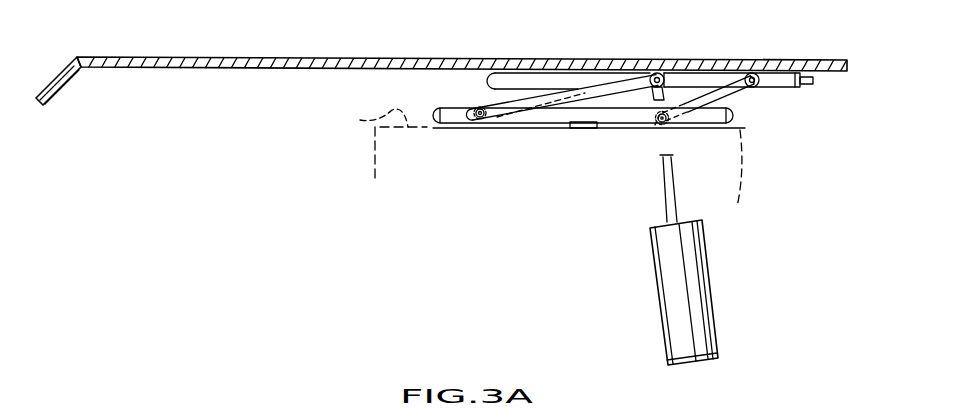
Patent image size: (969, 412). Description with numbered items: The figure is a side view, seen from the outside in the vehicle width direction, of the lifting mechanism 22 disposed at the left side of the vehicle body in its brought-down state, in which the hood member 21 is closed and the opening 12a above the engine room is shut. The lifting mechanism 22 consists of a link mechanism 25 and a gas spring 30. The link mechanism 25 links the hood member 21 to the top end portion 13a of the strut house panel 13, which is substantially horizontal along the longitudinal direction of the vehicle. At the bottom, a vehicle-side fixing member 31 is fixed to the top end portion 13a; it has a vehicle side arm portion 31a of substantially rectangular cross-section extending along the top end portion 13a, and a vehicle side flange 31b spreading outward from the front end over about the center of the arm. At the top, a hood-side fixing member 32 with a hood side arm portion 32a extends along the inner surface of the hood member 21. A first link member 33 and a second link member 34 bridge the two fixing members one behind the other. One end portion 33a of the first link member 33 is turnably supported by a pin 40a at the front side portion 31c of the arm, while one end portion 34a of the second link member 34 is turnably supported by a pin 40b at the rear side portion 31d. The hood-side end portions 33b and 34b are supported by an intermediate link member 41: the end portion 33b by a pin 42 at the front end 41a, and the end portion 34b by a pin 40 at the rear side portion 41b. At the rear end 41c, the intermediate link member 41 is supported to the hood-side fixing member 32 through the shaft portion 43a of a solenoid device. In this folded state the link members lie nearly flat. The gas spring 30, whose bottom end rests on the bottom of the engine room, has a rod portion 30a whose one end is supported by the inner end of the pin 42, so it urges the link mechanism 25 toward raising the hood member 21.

The hood member 21 is at (318, 57).
The opening 12a is at (242, 84).
The strut house panel 13 is at (391, 166).
The top end portion 13a is at (360, 119).
The link mechanism 25 is at (444, 92).
The hood-side fixing member 32 is at (568, 52).
The hood side arm portion 32a is at (503, 72).
The first link member 33 is at (586, 78).
The one end portion 33a is at (477, 120).
The one end portion 33b is at (645, 76).
The pin 42 is at (658, 74).
The vehicle-side fixing member 31 is at (573, 136).
The vehicle side arm portion 31a is at (735, 118).
The vehicle side flange 31b is at (470, 125).
The front side portion 31c is at (467, 121).
The rear side portion 31d is at (672, 123).
The pin 40a is at (493, 121).
The pin 40b is at (676, 126).
The intermediate link member 41 is at (720, 66).
The front end 41a is at (678, 76).
The rear side portion 41b is at (773, 76).
The rear end 41c is at (793, 75).
The pin 40 is at (752, 75).
The shaft portion 43a is at (815, 80).
The second link member 34 is at (743, 104).
The one end portion 34a is at (655, 125).
The one end portion 34b is at (760, 90).
The lifting mechanism 22 is at (768, 246).
The gas spring 30 is at (729, 330).
The rod portion 30a is at (653, 100).